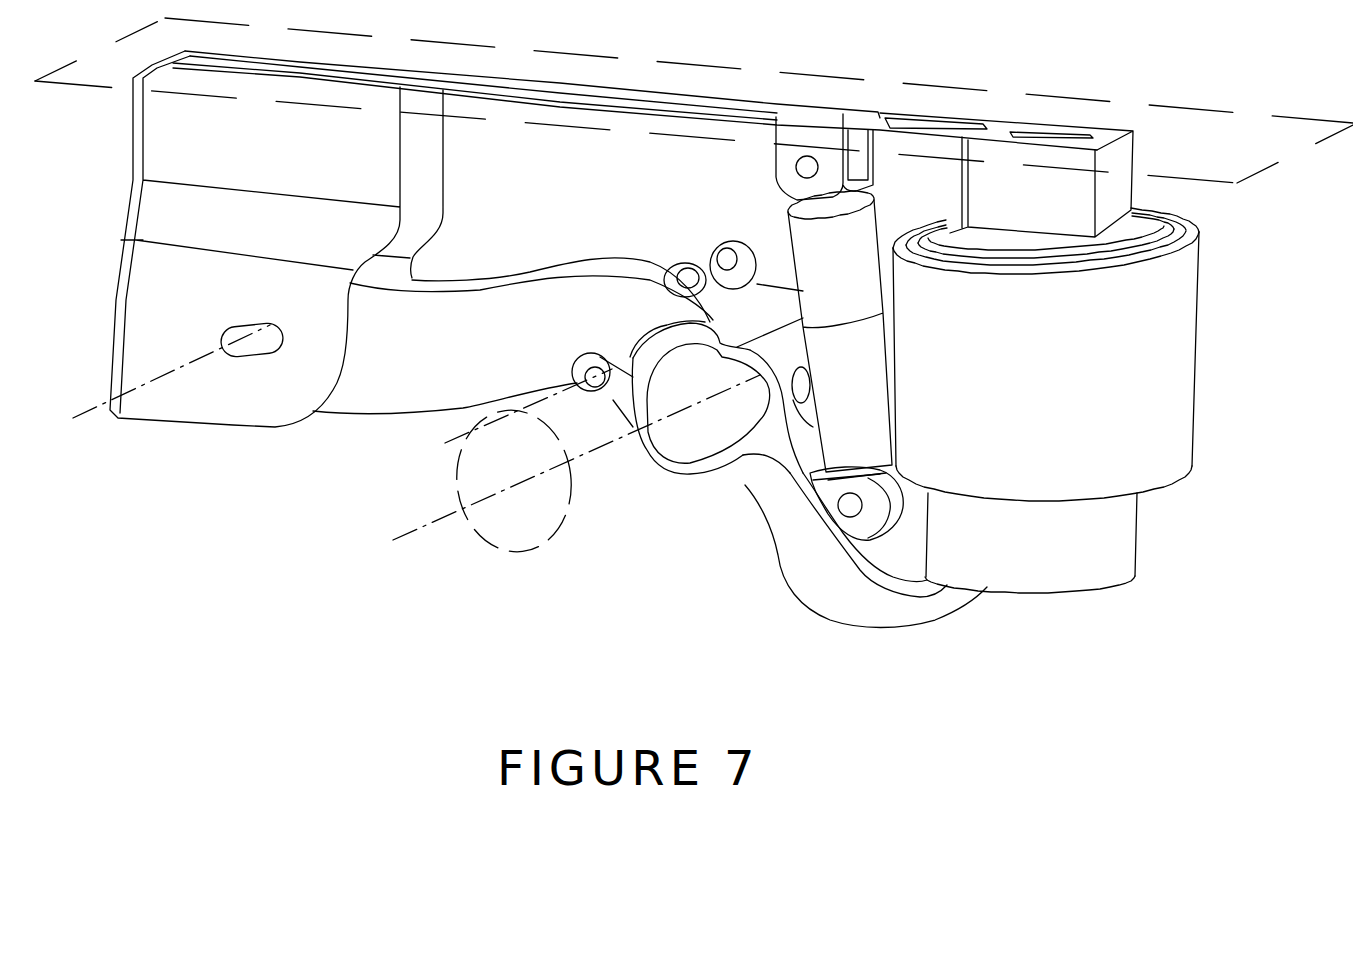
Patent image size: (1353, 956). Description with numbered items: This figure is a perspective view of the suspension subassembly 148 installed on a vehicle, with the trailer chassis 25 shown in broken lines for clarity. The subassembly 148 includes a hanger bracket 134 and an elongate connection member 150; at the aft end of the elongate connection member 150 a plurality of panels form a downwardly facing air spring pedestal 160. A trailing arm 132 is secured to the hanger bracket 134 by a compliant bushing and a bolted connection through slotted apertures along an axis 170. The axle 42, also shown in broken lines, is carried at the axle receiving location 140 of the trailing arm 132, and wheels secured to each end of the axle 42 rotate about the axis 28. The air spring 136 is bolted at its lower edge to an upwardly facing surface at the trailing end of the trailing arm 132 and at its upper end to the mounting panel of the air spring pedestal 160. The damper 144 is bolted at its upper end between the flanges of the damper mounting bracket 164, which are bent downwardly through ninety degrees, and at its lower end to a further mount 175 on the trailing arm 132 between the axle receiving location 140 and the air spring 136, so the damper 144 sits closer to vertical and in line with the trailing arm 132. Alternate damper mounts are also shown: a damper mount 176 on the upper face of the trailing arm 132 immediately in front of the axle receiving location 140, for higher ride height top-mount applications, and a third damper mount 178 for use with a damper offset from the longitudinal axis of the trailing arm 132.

The trailer chassis 25 is at (1189, 106).
The axis 28 is at (418, 528).
The axle 42 is at (595, 513).
The trailing arm 132 is at (393, 390).
The hanger bracket 134 is at (135, 298).
The air spring 136 is at (1192, 360).
The axle receiving location 140 is at (728, 455).
The damper 144 is at (800, 244).
The subassembly 148 is at (248, 480).
The elongate connection member 150 is at (590, 80).
The air spring pedestal 160 is at (1143, 183).
The damper mounting bracket 164 is at (772, 147).
The axis 170 is at (145, 385).
The further mount 175 is at (778, 560).
The damper mount 176 is at (668, 268).
The third damper mount 178 is at (576, 363).